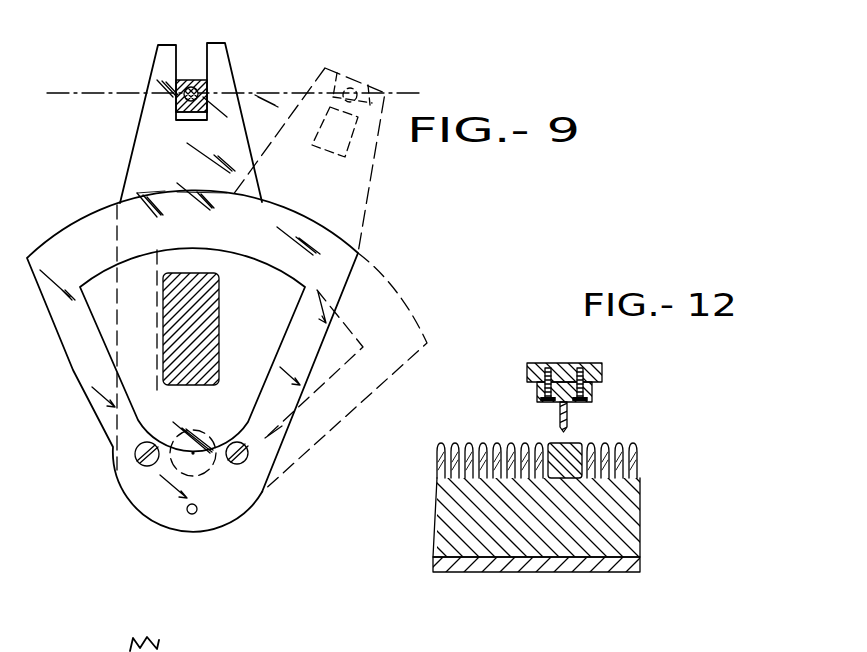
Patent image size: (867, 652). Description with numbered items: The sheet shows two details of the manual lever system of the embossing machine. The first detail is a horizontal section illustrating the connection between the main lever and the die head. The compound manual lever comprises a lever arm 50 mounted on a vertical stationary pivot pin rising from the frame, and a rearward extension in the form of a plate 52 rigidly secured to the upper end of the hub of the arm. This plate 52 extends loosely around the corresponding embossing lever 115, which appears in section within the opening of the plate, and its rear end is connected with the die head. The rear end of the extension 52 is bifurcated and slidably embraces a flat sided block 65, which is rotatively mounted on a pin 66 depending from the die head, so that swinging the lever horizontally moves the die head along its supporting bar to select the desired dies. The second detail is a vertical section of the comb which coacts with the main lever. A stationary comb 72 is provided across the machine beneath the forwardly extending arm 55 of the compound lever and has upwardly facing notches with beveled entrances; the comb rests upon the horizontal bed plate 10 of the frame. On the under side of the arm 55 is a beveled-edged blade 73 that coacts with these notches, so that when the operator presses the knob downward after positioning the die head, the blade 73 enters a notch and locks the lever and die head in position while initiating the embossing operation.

In FIG. 9, the plate 52 is at (158, 138).
In FIG. 9, the flat sided block 65 is at (205, 82).
In FIG. 9, the pin 66 is at (195, 93).
In FIG. 9, the embossing lever 115 is at (220, 314).
In FIG. 9, the lever arm 50 is at (208, 470).
In FIG. 12, the forwardly extending arm 55 is at (603, 372).
In FIG. 12, the beveled-edged blade 73 is at (569, 418).
In FIG. 12, the stationary comb 72 is at (618, 502).
In FIG. 12, the bed plate 10 is at (581, 565).